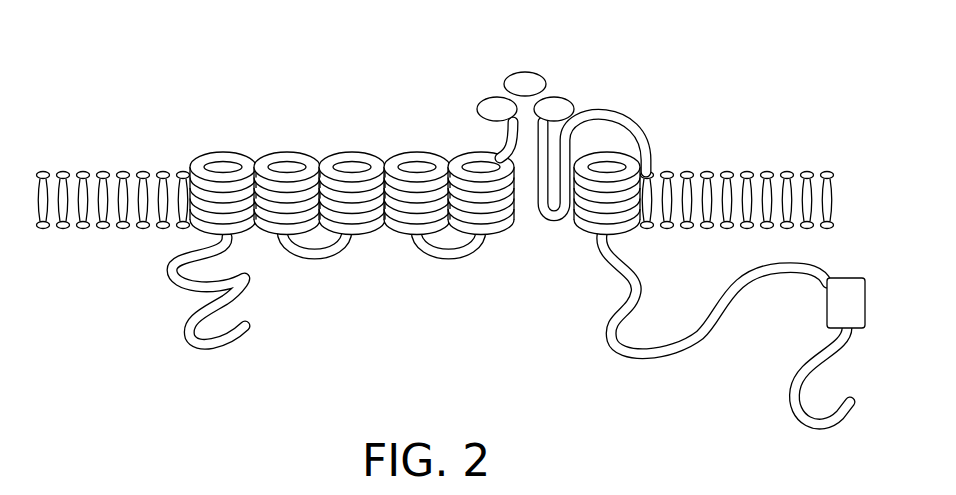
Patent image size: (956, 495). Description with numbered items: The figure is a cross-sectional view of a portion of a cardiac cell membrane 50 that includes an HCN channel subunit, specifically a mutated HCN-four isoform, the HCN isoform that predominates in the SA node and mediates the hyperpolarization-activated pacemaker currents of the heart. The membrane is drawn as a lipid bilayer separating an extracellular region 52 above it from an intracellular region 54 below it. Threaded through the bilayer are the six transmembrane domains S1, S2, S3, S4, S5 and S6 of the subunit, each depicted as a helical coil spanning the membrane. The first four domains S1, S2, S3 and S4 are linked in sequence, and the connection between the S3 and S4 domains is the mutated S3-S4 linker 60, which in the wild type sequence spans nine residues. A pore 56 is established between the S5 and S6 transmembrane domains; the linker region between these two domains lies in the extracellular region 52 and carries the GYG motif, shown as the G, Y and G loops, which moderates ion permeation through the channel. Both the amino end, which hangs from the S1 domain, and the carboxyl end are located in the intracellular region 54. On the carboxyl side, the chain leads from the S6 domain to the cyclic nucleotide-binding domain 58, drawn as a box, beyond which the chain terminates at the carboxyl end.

The cardiac cell membrane 50 is at (108, 70).
The extracellular region 52 is at (183, 61).
The intracellular region 54 is at (125, 370).
The pore 56 is at (601, 80).
The cyclic nucleotide-binding domain 58 is at (827, 307).
The mutated S3-S4 linker 60 is at (319, 144).
The transmembrane domain S1 is at (212, 152).
The transmembrane domain S2 is at (299, 152).
The transmembrane domain S3 is at (347, 152).
The transmembrane domain S4 is at (411, 152).
The transmembrane domain S5 is at (492, 152).
The transmembrane domain S6 is at (588, 152).